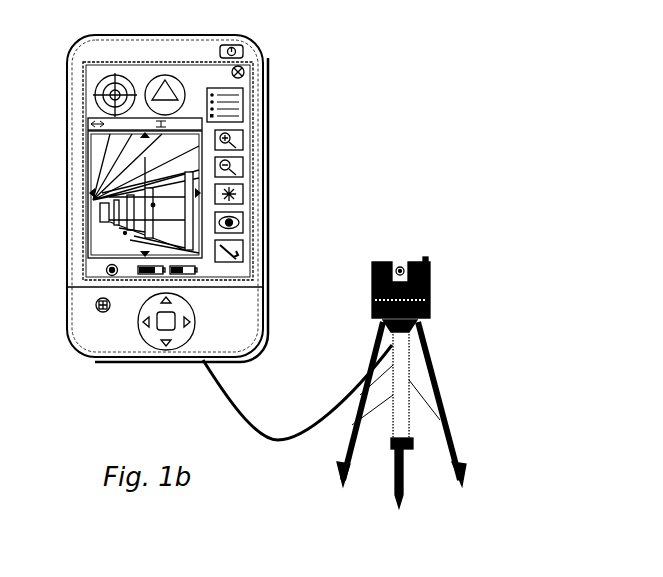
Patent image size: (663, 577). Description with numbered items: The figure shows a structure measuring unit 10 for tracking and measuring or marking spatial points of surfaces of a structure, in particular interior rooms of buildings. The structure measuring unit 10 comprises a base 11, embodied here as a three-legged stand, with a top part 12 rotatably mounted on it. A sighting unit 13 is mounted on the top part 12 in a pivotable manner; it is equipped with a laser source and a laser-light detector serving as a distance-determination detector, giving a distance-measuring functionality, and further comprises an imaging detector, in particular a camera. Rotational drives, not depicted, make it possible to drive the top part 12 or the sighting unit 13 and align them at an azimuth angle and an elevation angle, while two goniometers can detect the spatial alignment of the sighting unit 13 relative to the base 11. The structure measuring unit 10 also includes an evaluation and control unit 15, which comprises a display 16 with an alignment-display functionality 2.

The evaluation and control unit 15 is at (278, 128).
The alignment-display functionality 2 is at (153, 205).
The display 16 is at (125, 233).
The structure measuring unit 10 is at (419, 363).
The top part 12 is at (427, 292).
The sighting unit 13 is at (399, 268).
The base 11 is at (427, 352).